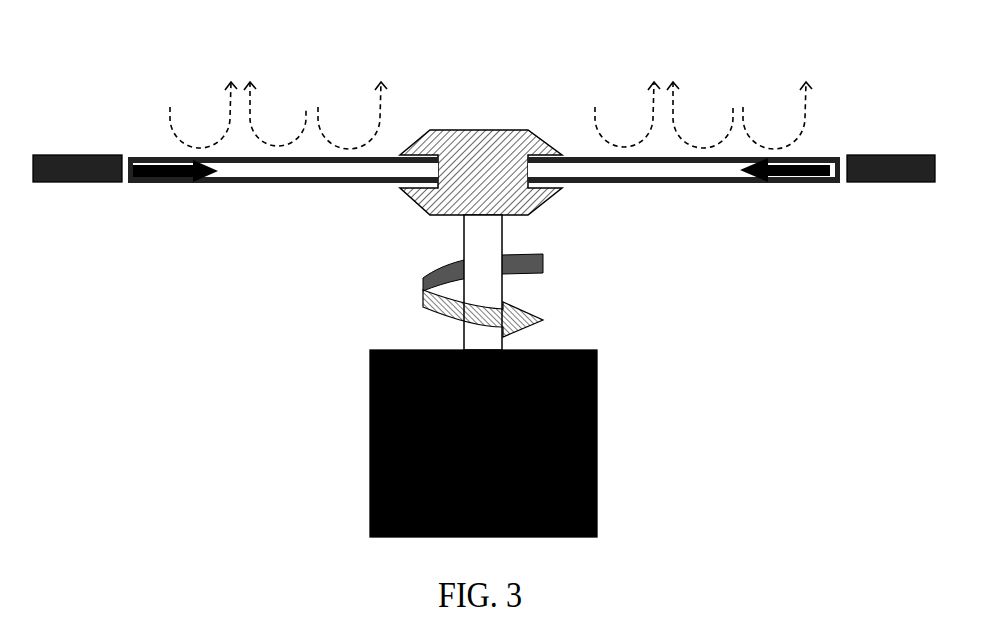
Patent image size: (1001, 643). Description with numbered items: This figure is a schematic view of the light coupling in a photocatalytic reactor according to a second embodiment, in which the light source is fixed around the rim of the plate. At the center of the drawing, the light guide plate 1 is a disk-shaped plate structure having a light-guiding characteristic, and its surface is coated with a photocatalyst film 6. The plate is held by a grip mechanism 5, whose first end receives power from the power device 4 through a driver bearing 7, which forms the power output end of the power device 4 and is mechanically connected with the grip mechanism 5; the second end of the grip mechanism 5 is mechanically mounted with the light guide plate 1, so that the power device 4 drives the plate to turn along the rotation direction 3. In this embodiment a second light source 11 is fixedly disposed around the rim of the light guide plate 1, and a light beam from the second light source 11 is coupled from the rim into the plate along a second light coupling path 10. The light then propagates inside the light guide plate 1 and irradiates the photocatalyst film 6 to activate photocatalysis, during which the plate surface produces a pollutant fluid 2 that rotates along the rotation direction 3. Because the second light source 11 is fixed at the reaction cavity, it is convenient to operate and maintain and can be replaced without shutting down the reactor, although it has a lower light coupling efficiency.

The light guide plate 1 is at (711, 185).
The pollutant fluid 2 is at (290, 118).
The rotation direction 3 is at (401, 278).
The power device 4 is at (368, 422).
The grip mechanism 5 is at (505, 128).
The photocatalyst film 6 is at (825, 183).
The driver bearing 7 is at (466, 242).
The second light coupling path 10 is at (783, 174).
The second light source 11 is at (88, 155).